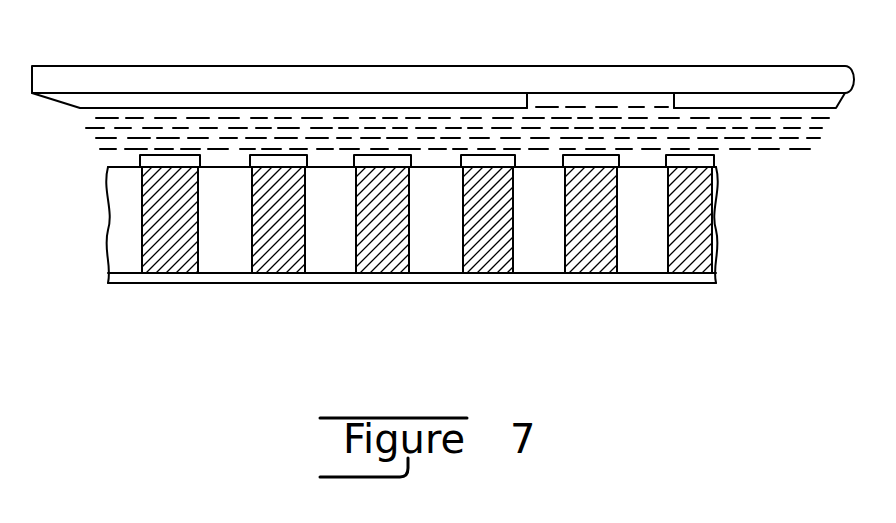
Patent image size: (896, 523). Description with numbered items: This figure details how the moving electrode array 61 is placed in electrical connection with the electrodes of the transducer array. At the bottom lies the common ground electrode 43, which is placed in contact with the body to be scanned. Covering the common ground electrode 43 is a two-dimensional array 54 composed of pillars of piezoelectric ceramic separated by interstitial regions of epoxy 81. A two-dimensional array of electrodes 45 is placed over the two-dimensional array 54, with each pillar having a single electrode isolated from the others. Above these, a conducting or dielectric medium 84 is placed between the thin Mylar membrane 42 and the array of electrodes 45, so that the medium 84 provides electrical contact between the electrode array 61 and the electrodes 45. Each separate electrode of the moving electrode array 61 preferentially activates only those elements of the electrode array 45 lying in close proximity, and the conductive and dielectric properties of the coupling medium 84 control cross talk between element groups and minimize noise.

The thin Mylar membrane 42 is at (793, 72).
The common ground electrode 43 is at (707, 277).
The two-dimensional array of electrodes 45 is at (273, 155).
The two-dimensional array 54 is at (150, 266).
The electrode array 61 is at (686, 97).
The interstitial regions of epoxy 81 is at (225, 264).
The conducting or dielectric medium 84 is at (783, 125).